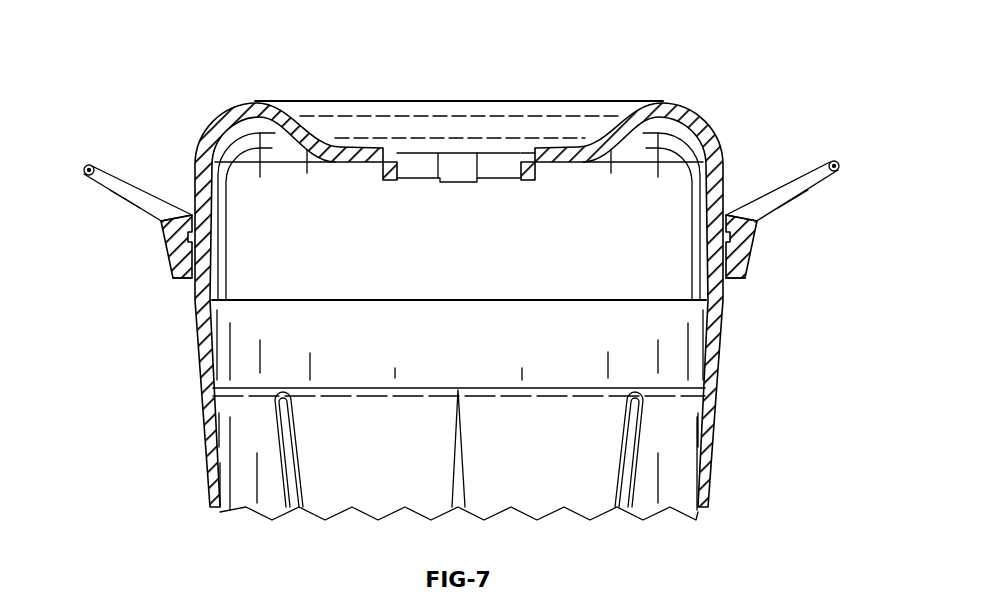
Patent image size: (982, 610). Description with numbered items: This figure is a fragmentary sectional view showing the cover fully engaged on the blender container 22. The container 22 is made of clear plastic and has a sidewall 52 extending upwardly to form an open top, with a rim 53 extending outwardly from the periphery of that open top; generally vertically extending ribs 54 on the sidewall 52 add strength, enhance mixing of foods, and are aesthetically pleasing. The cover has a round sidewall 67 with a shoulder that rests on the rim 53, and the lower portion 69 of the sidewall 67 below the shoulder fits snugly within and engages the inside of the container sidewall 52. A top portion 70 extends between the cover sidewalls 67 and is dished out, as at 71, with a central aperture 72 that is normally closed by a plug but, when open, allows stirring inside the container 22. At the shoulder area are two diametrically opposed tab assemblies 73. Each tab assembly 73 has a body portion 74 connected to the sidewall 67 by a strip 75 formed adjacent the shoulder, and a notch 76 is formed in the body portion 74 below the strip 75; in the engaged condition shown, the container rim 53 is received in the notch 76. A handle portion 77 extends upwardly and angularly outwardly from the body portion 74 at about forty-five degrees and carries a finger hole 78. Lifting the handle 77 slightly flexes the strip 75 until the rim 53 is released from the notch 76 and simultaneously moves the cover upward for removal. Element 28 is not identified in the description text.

The blender container 22 is at (205, 489).
The top wall 28 is at (671, 100).
The sidewall 52 is at (205, 433).
The rim 53 is at (193, 228).
The ribs 54 is at (300, 455).
The sidewall 67 is at (197, 172).
The lower portion 69 is at (208, 277).
The top portion 70 is at (238, 108).
The dished out area 71 is at (540, 153).
The central aperture 72 is at (410, 168).
The tab assembly 73 is at (114, 172).
The body portion 74 is at (183, 278).
The strip 75 is at (180, 220).
The notch 76 is at (187, 248).
The handle portion 77 is at (84, 169).
The finger hole 78 is at (127, 200).